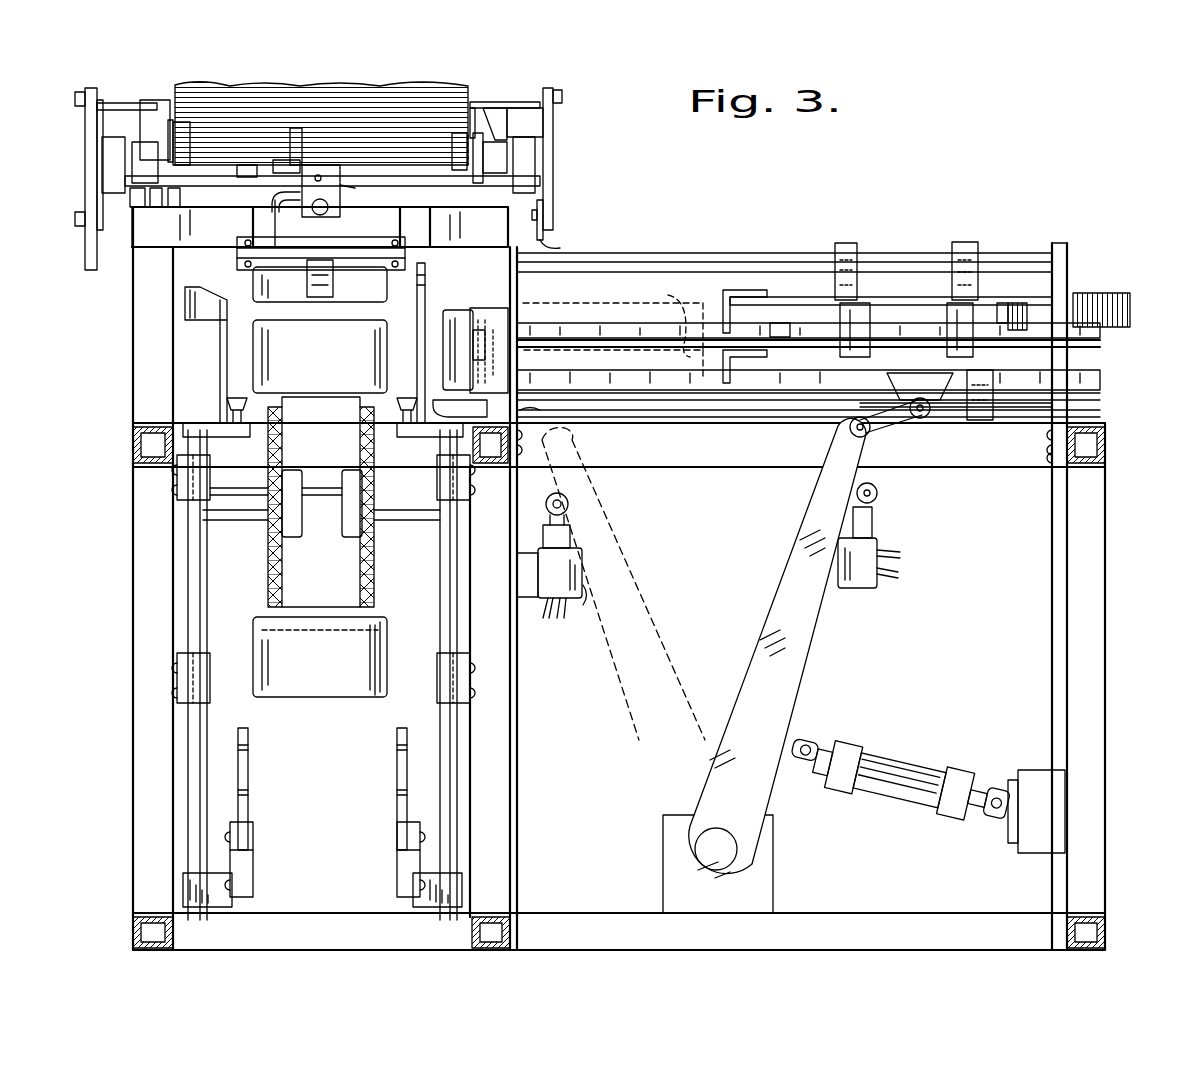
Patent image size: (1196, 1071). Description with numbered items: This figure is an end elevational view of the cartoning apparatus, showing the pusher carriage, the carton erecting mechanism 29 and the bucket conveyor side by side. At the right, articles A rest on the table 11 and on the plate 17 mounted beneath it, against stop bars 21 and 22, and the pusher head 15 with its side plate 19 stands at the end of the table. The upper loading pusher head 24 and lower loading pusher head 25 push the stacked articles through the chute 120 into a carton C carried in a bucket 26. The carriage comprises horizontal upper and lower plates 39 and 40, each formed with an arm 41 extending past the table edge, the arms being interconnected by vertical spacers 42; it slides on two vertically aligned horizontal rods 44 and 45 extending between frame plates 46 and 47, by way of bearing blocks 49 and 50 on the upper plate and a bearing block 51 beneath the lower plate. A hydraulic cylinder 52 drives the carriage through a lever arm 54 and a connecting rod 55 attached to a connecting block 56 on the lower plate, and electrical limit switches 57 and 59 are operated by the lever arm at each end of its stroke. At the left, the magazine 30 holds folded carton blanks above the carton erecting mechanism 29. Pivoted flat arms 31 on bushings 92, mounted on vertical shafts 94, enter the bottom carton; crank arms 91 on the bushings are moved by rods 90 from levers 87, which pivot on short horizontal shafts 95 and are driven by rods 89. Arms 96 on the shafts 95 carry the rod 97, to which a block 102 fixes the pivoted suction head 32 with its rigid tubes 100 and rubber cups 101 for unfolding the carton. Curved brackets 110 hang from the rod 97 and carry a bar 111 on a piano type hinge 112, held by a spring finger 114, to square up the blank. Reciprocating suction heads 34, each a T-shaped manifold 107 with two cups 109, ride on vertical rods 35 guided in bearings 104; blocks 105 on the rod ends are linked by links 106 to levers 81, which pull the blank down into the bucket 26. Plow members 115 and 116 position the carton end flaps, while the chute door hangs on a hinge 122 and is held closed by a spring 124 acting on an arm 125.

The table 11 is at (545, 343).
The pusher head 15 is at (1003, 303).
The plate 17 is at (700, 395).
The side plate 19 is at (1125, 315).
The stop bar 21 is at (585, 330).
The stop bar 22 is at (612, 380).
The upper loading pusher head 24 is at (728, 288).
The lower loading pusher head 25 is at (725, 390).
The bucket 26 is at (320, 352).
The carton erecting mechanism 29 is at (492, 120).
The magazine 30 is at (182, 125).
The pivoted flat arms 31 is at (240, 182).
The pivoted suction head 32 is at (335, 195).
The reciprocating suction head 34 is at (213, 440).
The vertical rods 35 is at (195, 580).
The upper plate 39 is at (775, 297).
The lower plate 40 is at (752, 358).
The arm 41 is at (850, 303).
The spacers 42 is at (955, 320).
The rod 44 is at (645, 260).
The rod 45 is at (1020, 408).
The frame plate 46 is at (568, 238).
The frame plate 47 is at (1067, 268).
The bearing block 49 is at (842, 243).
The bearing block 50 is at (964, 242).
The bearing block 51 is at (978, 420).
The hydraulic cylinder 52 is at (895, 778).
The lever arm 54 is at (640, 550).
The connecting rod 55 is at (890, 420).
The connecting block 56 is at (920, 400).
The electrical limit switch 57 is at (570, 603).
The electrical limit switch 59 is at (862, 590).
The levers 81 is at (248, 790).
The lever 87 is at (90, 128).
The rod 89 is at (97, 245).
The rods 90 is at (84, 92).
The crank arms 91 is at (104, 103).
The bushings 92 is at (145, 115).
The vertical shafts 94 is at (170, 118).
The short horizontal shafts 95 is at (95, 168).
The arms 96 is at (102, 142).
The rod 97 is at (152, 200).
The rigid tubes 100 is at (268, 205).
The rubber cups 101 is at (258, 125).
The block 102 is at (306, 214).
The bearing 104 is at (212, 476).
The blocks 105 is at (216, 905).
The links 106 is at (250, 870).
The T-shaped manifold 107 is at (283, 437).
The cups 109 is at (240, 398).
The curved brackets 110 is at (240, 216).
The bar 111 is at (258, 280).
The piano type hinge 112 is at (237, 255).
The spring finger 114 is at (333, 282).
The plow member 115 is at (436, 290).
The plow member 116 is at (185, 297).
The chute 120 is at (455, 310).
The hinge 122 is at (478, 308).
The spring 124 is at (490, 445).
The arm 125 is at (440, 402).
The article A is at (672, 297).
The carton C is at (293, 100).